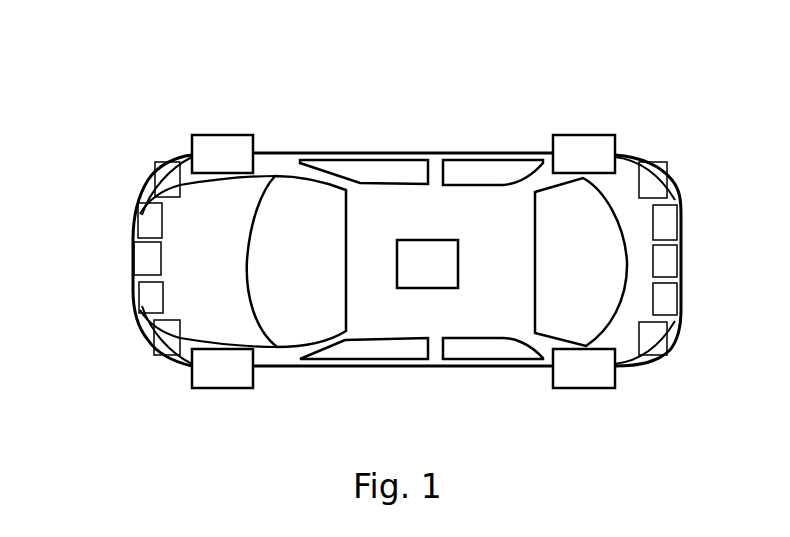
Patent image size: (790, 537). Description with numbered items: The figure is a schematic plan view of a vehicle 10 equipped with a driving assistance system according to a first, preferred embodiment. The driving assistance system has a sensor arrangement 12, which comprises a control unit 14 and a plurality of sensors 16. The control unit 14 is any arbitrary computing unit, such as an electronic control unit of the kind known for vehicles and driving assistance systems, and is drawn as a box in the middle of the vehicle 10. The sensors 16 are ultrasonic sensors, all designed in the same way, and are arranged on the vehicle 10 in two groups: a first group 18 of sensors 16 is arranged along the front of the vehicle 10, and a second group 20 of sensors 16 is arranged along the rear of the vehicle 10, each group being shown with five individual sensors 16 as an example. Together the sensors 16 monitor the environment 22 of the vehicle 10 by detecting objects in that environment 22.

The vehicle 10 is at (441, 94).
The sensor arrangement 12 is at (393, 121).
The control unit 14 is at (428, 290).
The sensors 16 is at (160, 162).
The first group 18 is at (135, 109).
The second group 20 is at (628, 106).
The environment 22 is at (87, 161).